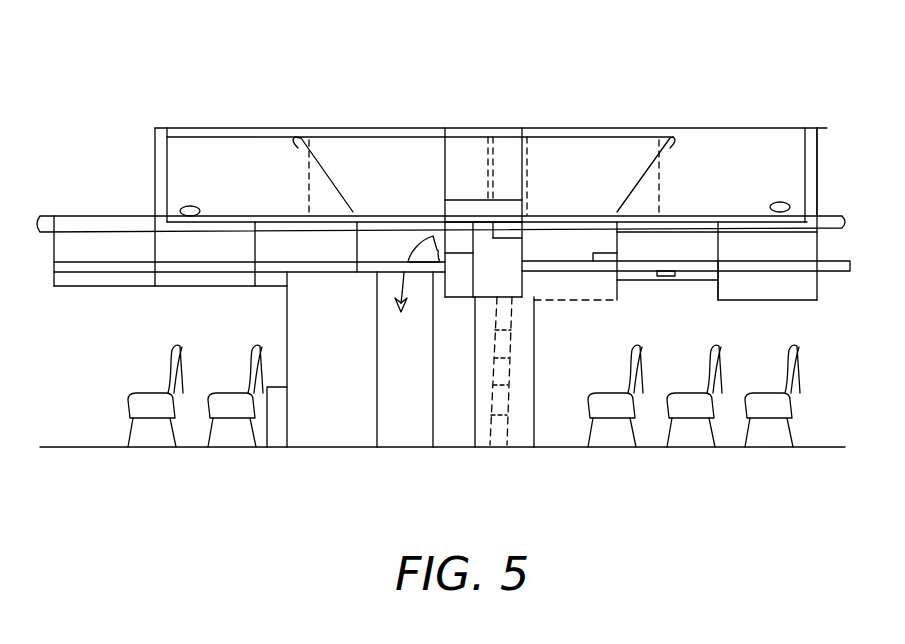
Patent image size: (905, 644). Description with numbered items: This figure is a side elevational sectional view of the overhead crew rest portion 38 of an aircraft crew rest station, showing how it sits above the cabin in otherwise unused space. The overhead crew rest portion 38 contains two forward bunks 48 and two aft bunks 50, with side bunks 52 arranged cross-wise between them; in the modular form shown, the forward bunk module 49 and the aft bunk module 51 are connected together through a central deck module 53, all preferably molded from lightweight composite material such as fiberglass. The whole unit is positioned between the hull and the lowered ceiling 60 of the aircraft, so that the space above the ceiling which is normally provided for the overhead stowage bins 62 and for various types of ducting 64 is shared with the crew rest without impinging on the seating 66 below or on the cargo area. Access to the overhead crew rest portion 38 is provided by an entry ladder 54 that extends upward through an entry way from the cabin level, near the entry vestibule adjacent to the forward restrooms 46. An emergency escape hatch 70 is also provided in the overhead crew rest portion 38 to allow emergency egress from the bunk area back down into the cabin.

The overhead crew rest portion 38 is at (826, 155).
The forward restrooms 46 is at (318, 435).
The forward bunks 48 is at (205, 150).
The forward bunk module 49 is at (242, 126).
The aft bunks 50 is at (762, 137).
The aft bunk module 51 is at (826, 126).
The side bunks 52 is at (418, 152).
The central deck module 53 is at (500, 125).
The entry ladder 54 is at (497, 381).
The lowered ceiling 60 is at (547, 283).
The overhead stowage bins 62 is at (780, 290).
The ducting 64 is at (40, 222).
The seating 66 is at (810, 396).
The emergency escape hatch 70 is at (397, 245).